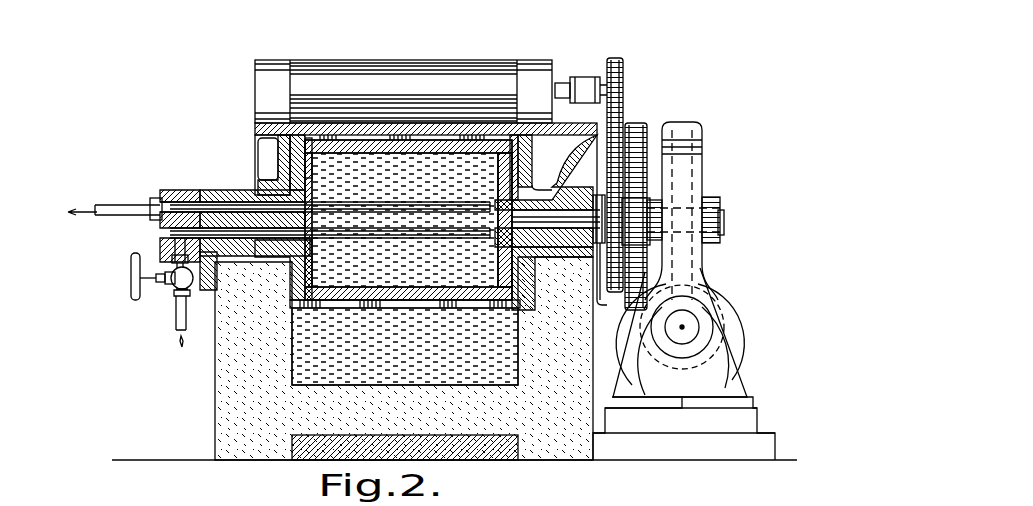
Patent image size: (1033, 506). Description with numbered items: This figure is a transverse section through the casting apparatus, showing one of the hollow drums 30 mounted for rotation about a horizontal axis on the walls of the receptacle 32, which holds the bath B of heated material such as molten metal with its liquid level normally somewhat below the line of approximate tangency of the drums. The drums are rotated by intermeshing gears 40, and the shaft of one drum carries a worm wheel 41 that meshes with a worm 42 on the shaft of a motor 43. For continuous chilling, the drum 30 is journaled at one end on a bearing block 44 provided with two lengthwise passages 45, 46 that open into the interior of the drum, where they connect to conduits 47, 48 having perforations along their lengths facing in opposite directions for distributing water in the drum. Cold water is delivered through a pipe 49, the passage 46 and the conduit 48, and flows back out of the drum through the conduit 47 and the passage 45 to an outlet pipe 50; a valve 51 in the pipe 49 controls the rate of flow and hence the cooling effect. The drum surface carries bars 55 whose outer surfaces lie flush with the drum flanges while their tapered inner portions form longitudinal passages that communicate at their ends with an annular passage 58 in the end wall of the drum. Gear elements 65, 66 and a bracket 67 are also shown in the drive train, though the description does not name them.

The drum 30 is at (348, 155).
The receptacle 32 is at (221, 411).
The gear 40 is at (650, 124).
The worm wheel 41 is at (690, 148).
The worm 42 is at (677, 365).
The motor 43 is at (742, 356).
The bearing block 44 is at (228, 200).
The passage 45 is at (196, 200).
The passage 46 is at (160, 243).
The conduit 47 is at (435, 203).
The conduit 48 is at (400, 240).
The pipe 49 is at (173, 318).
The outlet pipe 50 is at (117, 204).
The valve 51 is at (131, 279).
The bar 55 is at (336, 300).
The annular passage 58 is at (512, 282).
The gear 65 is at (626, 123).
The gear 66 is at (623, 70).
The bracket 67 is at (607, 161).
The bath B is at (290, 350).